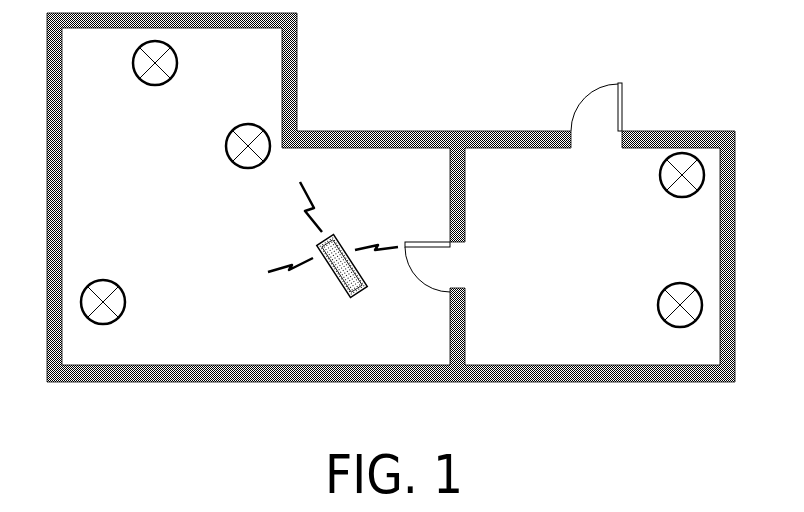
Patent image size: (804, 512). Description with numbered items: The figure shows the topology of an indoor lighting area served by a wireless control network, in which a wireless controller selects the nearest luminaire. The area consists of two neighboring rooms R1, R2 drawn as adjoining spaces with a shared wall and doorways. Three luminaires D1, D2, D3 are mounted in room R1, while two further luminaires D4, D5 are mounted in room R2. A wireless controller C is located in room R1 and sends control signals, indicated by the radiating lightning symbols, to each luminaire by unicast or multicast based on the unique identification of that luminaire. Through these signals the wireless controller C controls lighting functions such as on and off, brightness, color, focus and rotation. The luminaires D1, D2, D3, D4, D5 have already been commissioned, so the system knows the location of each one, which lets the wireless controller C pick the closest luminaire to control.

The room R1 is at (391, 220).
The room R2 is at (592, 255).
The luminaire D1 is at (248, 163).
The luminaire D2 is at (155, 80).
The luminaire D3 is at (103, 319).
The luminaire D4 is at (682, 192).
The luminaire D5 is at (680, 321).
The wireless controller C is at (333, 256).